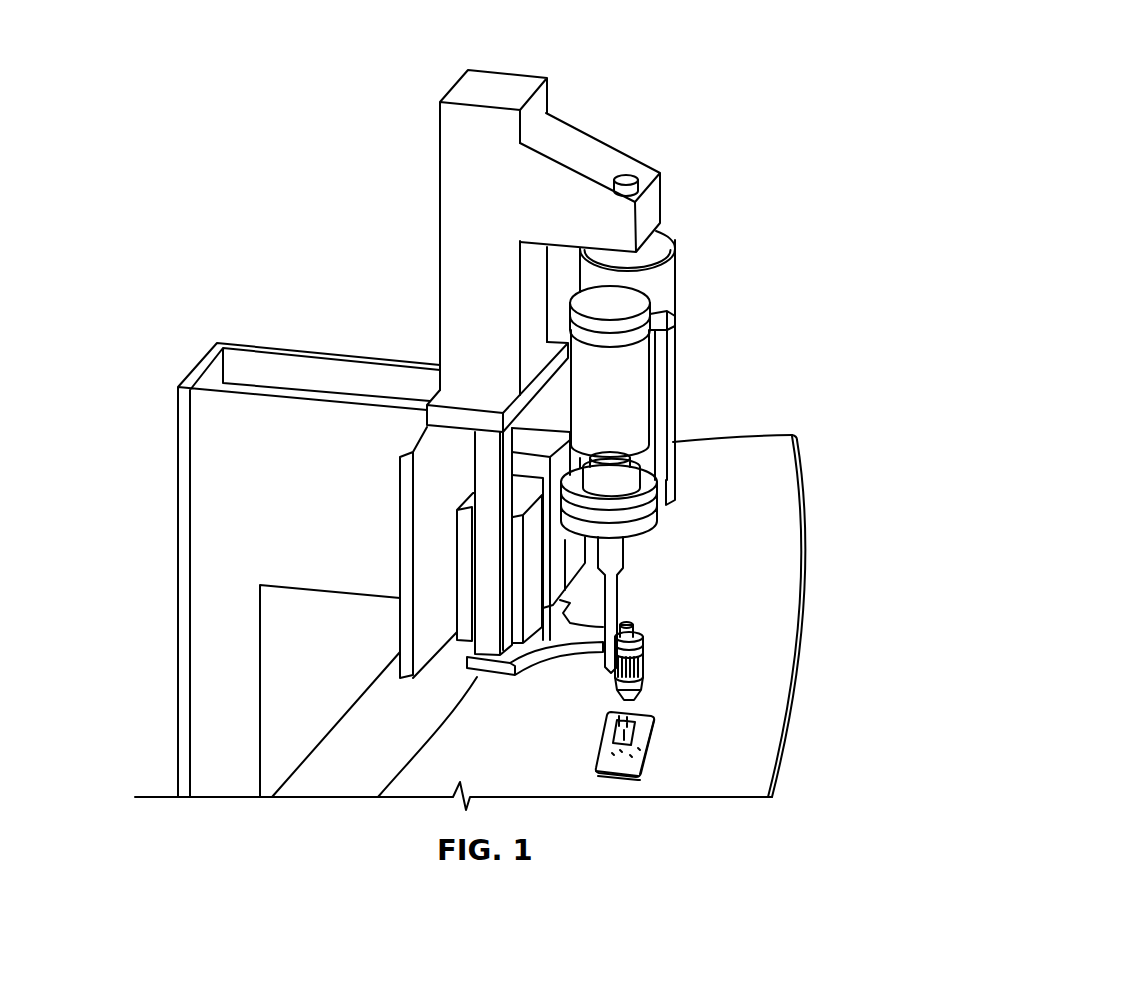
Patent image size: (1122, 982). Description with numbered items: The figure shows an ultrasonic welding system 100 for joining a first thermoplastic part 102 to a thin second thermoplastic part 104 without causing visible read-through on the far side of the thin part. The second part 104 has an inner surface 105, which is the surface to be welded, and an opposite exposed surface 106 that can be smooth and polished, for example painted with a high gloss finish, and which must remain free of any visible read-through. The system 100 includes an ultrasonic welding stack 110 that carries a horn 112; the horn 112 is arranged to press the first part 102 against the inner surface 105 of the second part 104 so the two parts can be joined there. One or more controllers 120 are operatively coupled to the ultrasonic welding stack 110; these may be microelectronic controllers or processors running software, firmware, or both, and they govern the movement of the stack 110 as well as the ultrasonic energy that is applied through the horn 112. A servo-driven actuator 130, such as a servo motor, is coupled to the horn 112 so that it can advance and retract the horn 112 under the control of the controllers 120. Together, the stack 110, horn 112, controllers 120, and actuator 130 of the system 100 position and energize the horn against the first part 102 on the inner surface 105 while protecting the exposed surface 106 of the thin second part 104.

The ultrasonic welding system 100 is at (620, 435).
The first thermoplastic part 102 is at (643, 732).
The second thermoplastic part 104 is at (802, 558).
The inner surface 105 is at (765, 498).
The exposed surface 106 is at (808, 680).
The ultrasonic welding stack 110 is at (692, 410).
The horn 112 is at (615, 613).
The controller 120 is at (461, 466).
The servo-driven actuator 130 is at (627, 370).